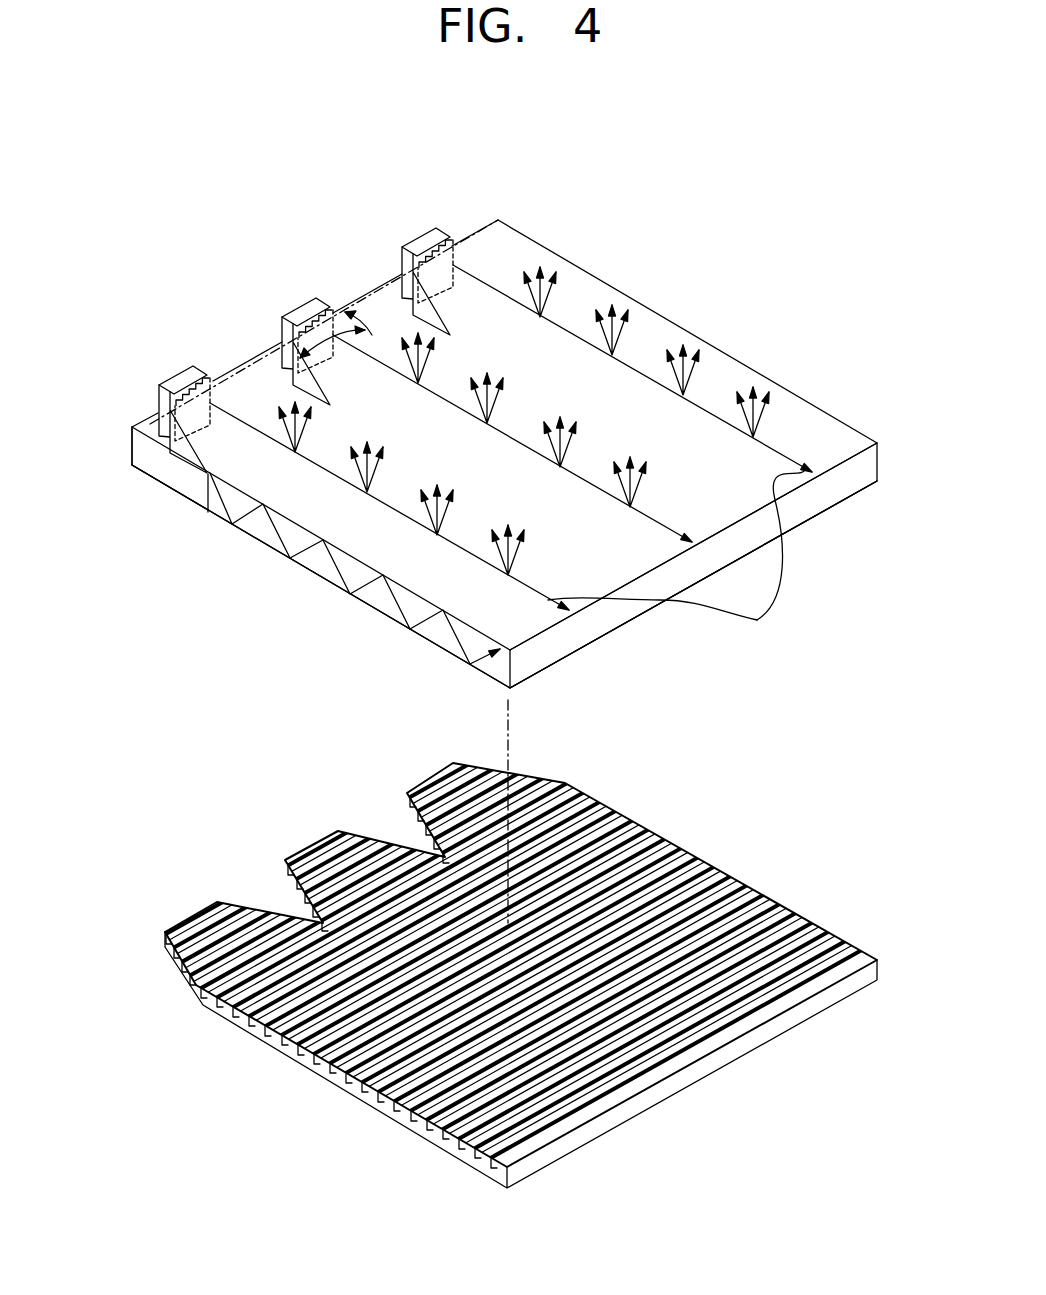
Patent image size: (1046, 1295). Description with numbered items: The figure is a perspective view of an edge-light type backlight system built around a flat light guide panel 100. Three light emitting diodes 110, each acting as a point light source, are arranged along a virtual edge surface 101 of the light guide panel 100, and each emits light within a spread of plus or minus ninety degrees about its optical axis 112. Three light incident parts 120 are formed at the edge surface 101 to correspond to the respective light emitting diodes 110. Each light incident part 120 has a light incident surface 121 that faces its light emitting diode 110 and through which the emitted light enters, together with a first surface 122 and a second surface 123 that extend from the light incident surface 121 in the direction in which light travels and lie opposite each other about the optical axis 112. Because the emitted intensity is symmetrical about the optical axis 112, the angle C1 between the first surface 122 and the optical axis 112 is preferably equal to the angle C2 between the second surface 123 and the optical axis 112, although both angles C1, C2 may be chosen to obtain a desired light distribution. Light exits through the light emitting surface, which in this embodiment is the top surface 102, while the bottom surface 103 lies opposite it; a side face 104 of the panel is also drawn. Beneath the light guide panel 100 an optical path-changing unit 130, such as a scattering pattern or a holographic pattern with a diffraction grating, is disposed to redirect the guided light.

The light guide panel 100 is at (814, 370).
The virtual edge surface 101 is at (130, 452).
The top surface 102 is at (752, 366).
The bottom surface 103 is at (543, 653).
The front side surface 104 is at (603, 615).
The light emitting diode 110 is at (590, 276).
The optical axis 112 is at (676, 562).
The light incident part 120 is at (445, 265).
The light incident surface 121 is at (158, 407).
The first surface 122 is at (395, 325).
The second surface 123 is at (192, 470).
The optical path-changing unit 130 is at (660, 1093).
The angle between the first surface and the optical axis C1 is at (369, 332).
The angle between the second surface and the optical axis C2 is at (332, 354).